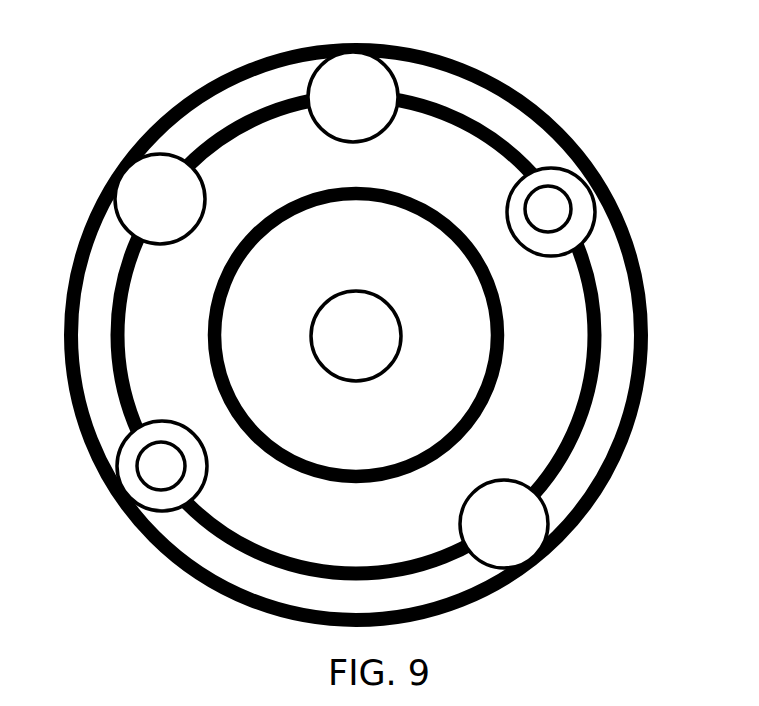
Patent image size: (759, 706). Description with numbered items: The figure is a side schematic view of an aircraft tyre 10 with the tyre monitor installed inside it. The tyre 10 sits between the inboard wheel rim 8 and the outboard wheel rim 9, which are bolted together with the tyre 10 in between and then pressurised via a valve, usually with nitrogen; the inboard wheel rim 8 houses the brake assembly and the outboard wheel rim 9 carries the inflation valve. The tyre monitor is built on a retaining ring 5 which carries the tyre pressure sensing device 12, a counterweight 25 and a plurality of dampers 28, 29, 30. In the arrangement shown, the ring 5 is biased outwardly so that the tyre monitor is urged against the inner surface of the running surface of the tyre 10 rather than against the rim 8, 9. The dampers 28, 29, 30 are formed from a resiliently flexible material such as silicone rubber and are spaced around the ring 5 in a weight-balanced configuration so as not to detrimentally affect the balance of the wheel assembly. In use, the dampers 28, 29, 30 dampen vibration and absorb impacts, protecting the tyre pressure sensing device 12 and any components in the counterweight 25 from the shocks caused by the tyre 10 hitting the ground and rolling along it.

The retaining ring 5 is at (247, 553).
The inboard wheel rim 8 is at (479, 335).
The outboard wheel rim 9 is at (503, 363).
The tyre 10 is at (538, 108).
The tyre pressure sensing device 12 is at (580, 199).
The counterweight 25 is at (138, 472).
The damper 28 is at (145, 197).
The damper 29 is at (370, 77).
The damper 30 is at (517, 543).